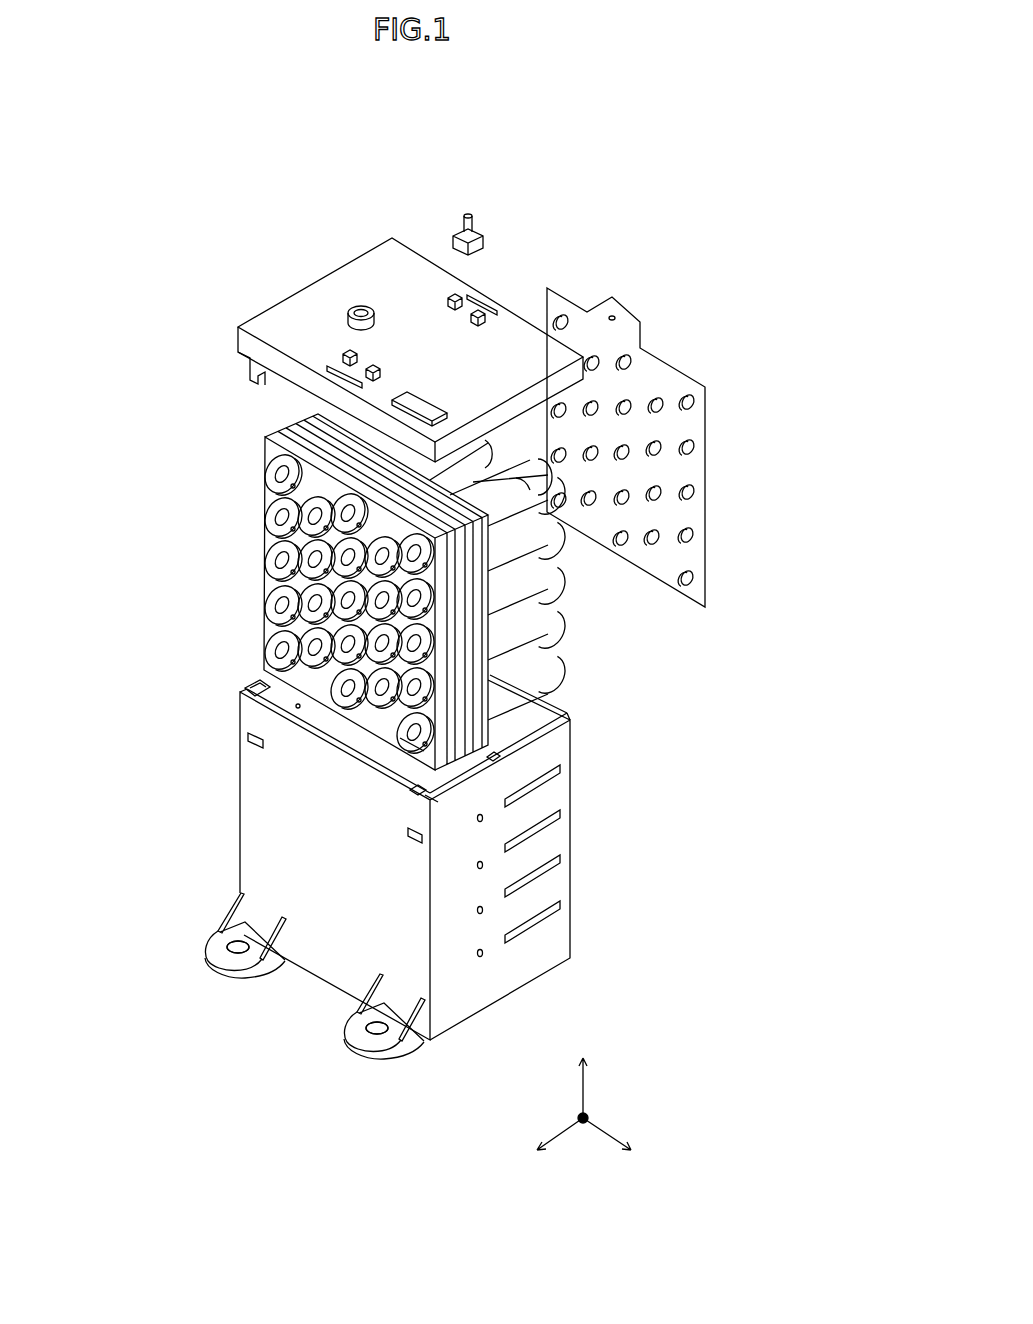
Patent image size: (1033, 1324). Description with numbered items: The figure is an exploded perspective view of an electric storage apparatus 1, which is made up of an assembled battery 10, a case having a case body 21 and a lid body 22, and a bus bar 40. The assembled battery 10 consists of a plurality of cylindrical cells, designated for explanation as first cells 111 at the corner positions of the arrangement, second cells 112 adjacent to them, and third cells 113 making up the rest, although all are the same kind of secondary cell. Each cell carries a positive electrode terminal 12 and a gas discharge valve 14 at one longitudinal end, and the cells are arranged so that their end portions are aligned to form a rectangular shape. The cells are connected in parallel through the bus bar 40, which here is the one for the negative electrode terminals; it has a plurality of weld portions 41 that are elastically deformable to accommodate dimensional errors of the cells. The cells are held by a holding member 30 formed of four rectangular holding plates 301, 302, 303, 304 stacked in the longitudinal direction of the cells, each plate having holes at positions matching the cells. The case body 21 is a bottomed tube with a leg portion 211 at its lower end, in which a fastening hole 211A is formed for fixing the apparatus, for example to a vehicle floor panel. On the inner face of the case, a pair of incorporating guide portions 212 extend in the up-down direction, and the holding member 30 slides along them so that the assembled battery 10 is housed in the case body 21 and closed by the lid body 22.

The electric storage apparatus 1 is at (686, 280).
The assembled battery 10 is at (658, 695).
The first cell 111 is at (257, 483).
The second cell 112 is at (267, 530).
The third cell 113 is at (273, 537).
The positive electrode terminal 12 is at (412, 745).
The gas discharge valve 14 is at (432, 802).
The case body 21 is at (570, 940).
The lid body 22 is at (383, 278).
The leg portion 211 is at (215, 945).
The fastening hole 211A is at (238, 955).
The incorporating guide portion 212 is at (258, 690).
The holding member 30 is at (224, 357).
The holding plate 301 is at (273, 437).
The holding plate 302 is at (283, 428).
The holding plate 303 is at (297, 422).
The holding plate 304 is at (310, 412).
The bus bar 40 is at (653, 375).
The weld portion 41 is at (690, 400).